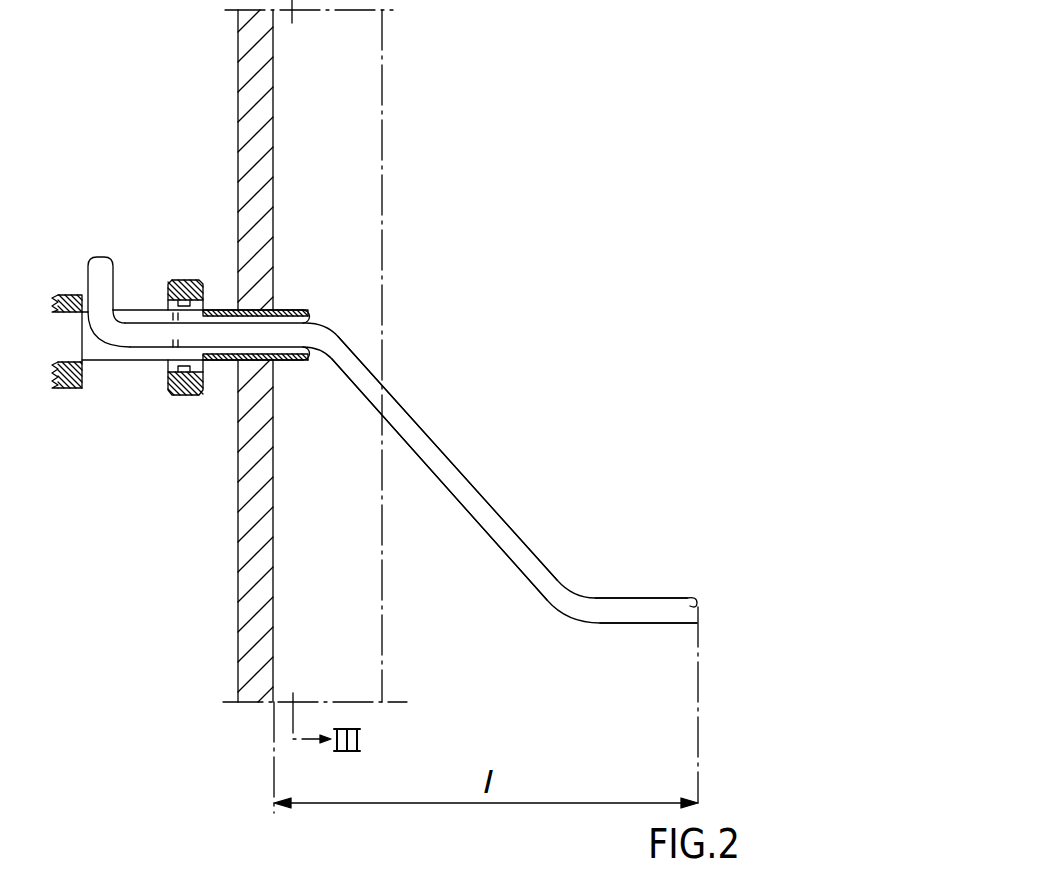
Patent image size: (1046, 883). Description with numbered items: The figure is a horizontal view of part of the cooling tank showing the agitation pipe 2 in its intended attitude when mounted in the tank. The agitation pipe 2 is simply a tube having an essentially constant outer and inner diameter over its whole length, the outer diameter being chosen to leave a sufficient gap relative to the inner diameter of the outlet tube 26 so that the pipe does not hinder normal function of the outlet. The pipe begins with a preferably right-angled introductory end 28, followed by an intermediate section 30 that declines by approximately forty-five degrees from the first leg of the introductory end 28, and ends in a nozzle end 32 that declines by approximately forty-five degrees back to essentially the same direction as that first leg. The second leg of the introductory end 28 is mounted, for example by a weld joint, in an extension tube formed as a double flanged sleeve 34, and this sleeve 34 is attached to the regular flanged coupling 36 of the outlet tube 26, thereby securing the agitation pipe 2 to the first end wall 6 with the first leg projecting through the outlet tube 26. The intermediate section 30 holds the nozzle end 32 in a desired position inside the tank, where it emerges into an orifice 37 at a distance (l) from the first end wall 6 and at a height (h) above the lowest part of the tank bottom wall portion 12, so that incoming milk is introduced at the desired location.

The agitation pipe 2 is at (431, 498).
The first end wall 6 is at (238, 574).
The tank bottom wall portion 12 is at (382, 113).
The outlet tube 26 is at (222, 305).
The introductory end 28 is at (94, 246).
The intermediate section 30 is at (458, 464).
The nozzle end 32 is at (640, 624).
The double flanged sleeve 34 is at (127, 362).
The flanged coupling 36 is at (177, 396).
The orifice 37 is at (696, 600).